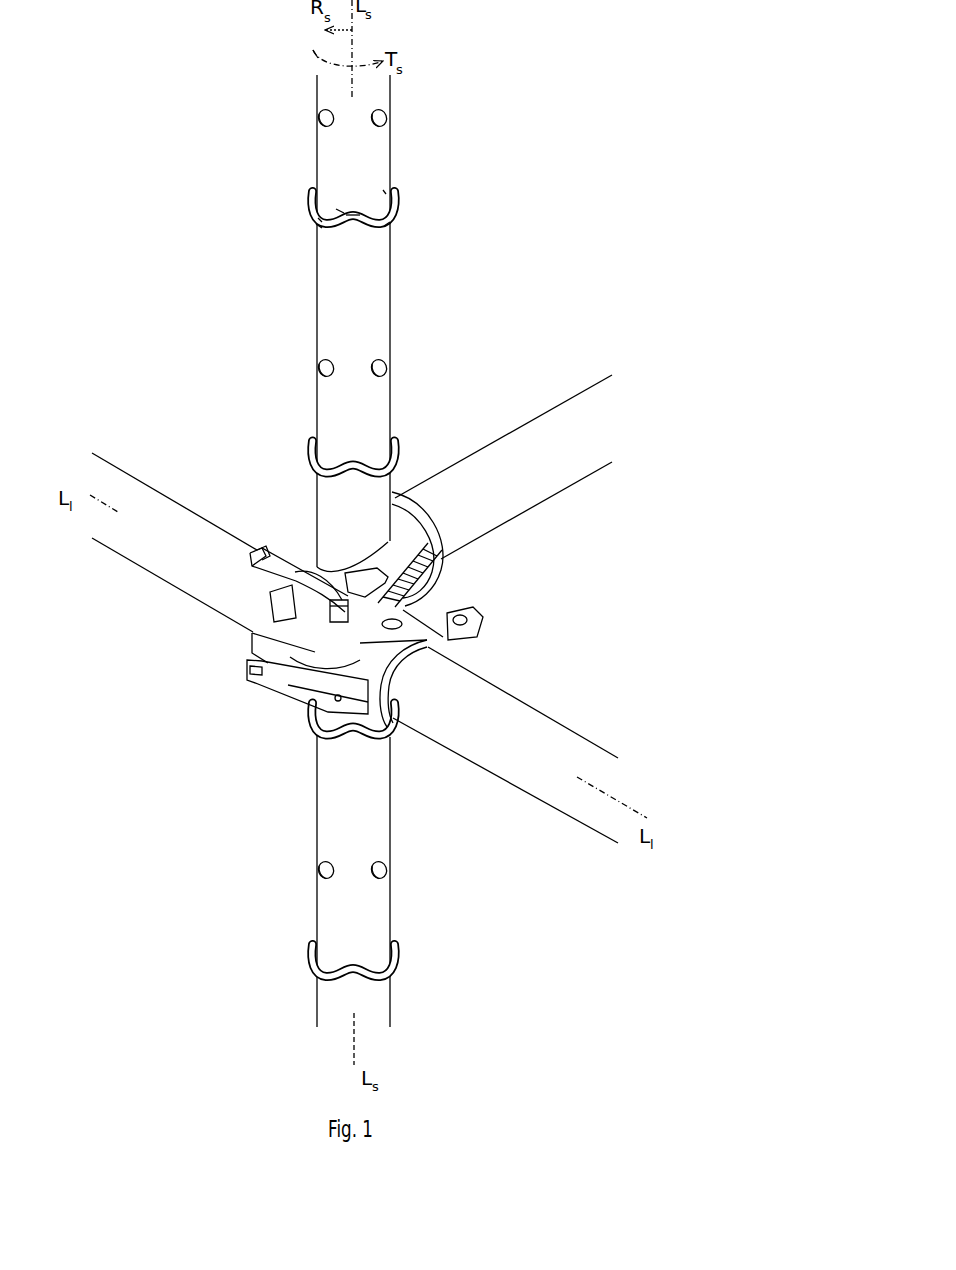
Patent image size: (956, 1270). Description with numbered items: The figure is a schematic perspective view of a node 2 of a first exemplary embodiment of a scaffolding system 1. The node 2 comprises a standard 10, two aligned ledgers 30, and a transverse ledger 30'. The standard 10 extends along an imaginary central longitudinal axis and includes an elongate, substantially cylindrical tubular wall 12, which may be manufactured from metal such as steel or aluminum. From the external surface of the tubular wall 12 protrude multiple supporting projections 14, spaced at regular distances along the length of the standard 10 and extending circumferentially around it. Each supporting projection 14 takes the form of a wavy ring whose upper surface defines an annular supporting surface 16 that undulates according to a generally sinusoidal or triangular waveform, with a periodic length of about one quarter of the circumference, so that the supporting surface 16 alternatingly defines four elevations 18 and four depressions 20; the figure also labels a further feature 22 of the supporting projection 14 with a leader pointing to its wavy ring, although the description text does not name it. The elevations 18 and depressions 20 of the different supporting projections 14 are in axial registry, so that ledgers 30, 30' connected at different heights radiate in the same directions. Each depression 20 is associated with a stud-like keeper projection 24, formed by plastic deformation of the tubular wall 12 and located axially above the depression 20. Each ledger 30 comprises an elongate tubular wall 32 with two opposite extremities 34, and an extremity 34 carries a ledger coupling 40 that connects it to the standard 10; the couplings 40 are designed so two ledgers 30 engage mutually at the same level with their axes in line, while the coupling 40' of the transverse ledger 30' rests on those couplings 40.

The scaffolding system 1 is at (545, 158).
The node 2 is at (175, 765).
The standard 10 is at (195, 290).
The tubular wall 12 is at (392, 310).
The supporting projection 14 is at (410, 195).
The supporting surface 16 is at (356, 214).
The elevation 18 is at (385, 188).
The depression 20 is at (320, 224).
The web of rosette 22 is at (340, 211).
The keeper projection 24 is at (316, 116).
The ledger 30 is at (336, 664).
The transverse ledger 30' is at (503, 467).
The tubular wall 32 is at (182, 504).
The extremity 34 is at (222, 642).
The ledger coupling 40 is at (385, 590).
The coupling 40' is at (439, 549).